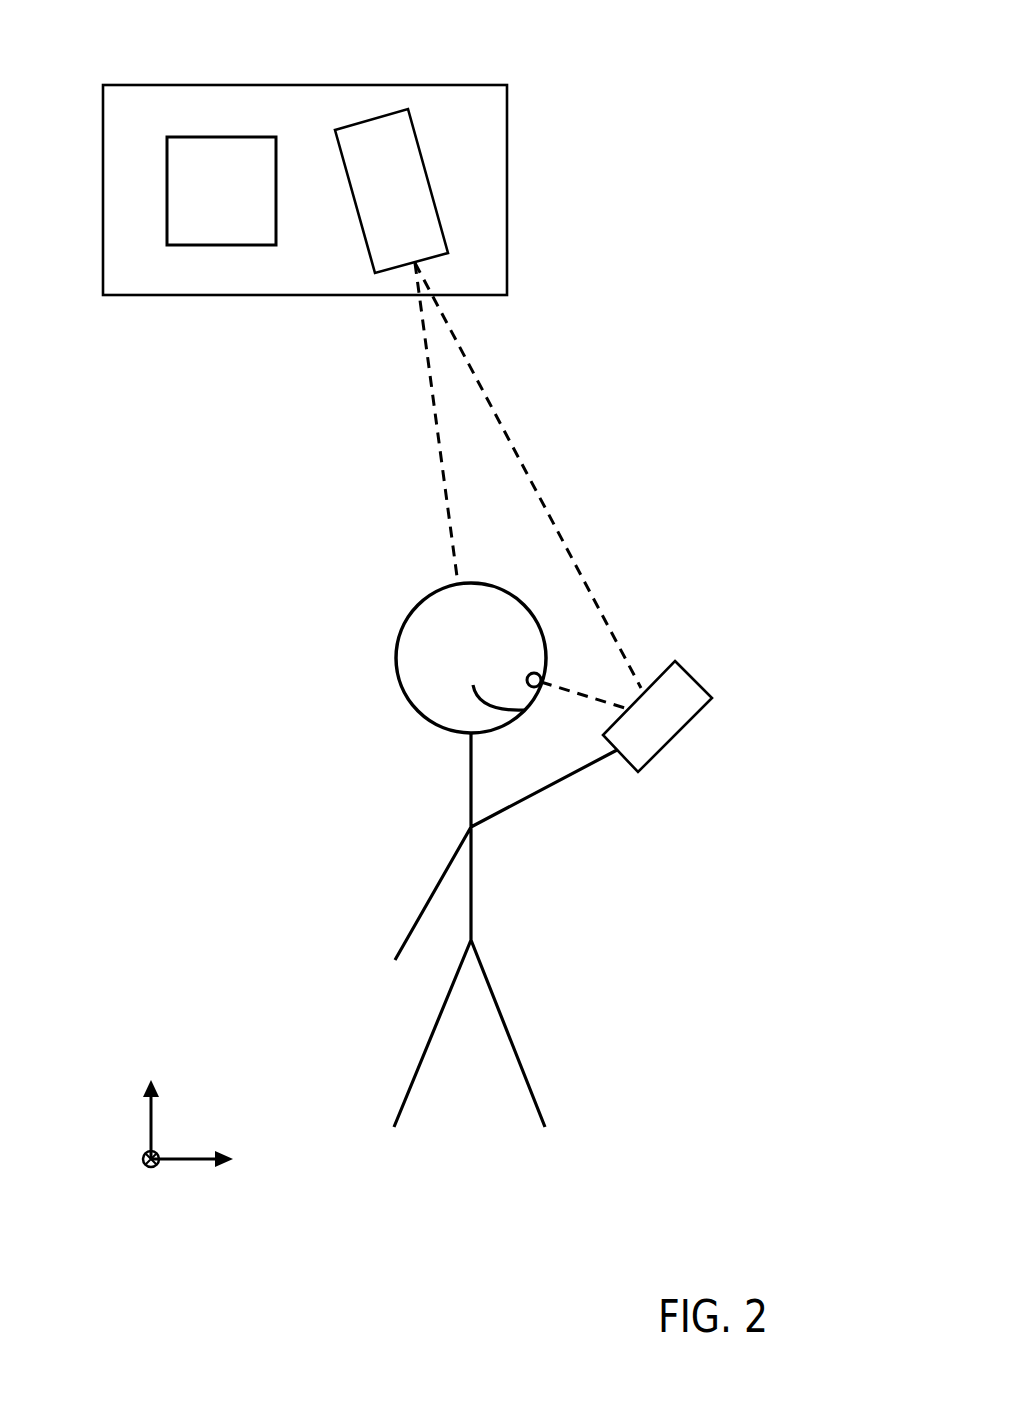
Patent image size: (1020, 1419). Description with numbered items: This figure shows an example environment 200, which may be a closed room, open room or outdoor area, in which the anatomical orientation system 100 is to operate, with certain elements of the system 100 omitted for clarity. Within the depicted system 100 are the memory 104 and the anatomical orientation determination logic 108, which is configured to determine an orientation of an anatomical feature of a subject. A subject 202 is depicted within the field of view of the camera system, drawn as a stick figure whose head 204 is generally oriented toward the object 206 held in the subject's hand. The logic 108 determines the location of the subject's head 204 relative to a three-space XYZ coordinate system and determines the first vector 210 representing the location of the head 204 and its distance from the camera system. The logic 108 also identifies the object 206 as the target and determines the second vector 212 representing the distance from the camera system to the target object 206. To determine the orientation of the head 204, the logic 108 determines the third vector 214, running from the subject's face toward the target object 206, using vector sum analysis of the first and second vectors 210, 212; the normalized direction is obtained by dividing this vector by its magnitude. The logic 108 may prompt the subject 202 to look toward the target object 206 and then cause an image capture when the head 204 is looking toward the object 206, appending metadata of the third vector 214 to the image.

The environment 200 is at (507, 41).
The anatomical orientation system 100 is at (163, 282).
The anatomical orientation determination logic 108 is at (246, 207).
The memory 104 is at (416, 207).
The subject 202 is at (474, 855).
The head of the subject 204 is at (495, 673).
The object 206 is at (682, 733).
The first vector 210 is at (438, 453).
The second vector 212 is at (527, 468).
The third vector 214 is at (585, 697).